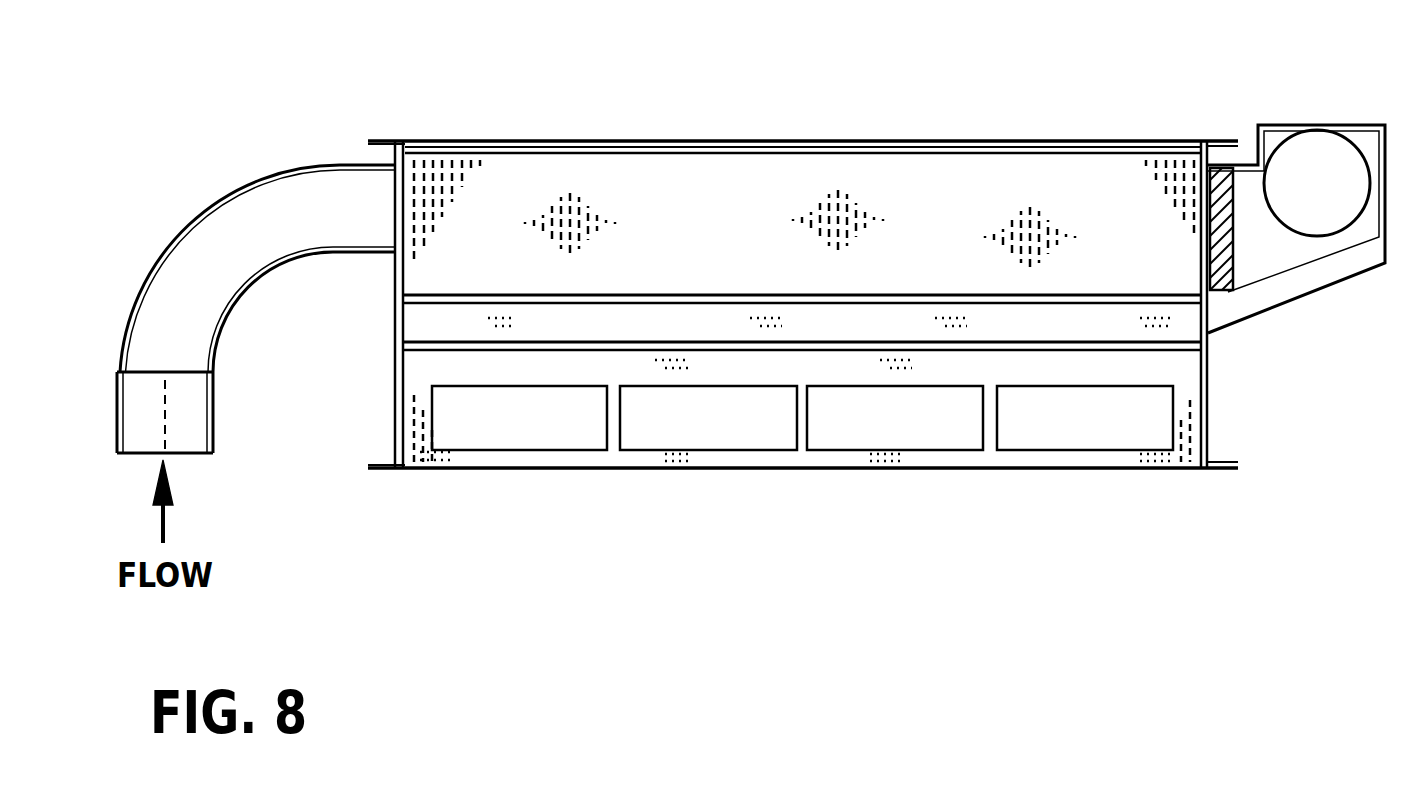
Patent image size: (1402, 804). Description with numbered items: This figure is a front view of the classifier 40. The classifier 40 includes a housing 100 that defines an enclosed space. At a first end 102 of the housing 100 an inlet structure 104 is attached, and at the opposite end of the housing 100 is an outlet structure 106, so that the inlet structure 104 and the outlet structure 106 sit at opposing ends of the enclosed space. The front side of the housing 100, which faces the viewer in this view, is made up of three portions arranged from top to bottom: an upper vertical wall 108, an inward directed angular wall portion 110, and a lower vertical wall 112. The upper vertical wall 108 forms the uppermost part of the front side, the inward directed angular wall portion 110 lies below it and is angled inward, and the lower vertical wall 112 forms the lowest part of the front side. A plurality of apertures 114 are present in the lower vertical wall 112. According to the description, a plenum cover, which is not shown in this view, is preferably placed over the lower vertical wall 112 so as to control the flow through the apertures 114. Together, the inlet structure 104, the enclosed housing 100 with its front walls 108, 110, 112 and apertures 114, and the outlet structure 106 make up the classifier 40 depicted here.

The classifier 40 is at (832, 125).
The housing 100 is at (698, 248).
The first end 102 is at (396, 272).
The inlet structure 104 is at (165, 358).
The outlet structure 106 is at (1282, 122).
The upper vertical wall 108 is at (987, 228).
The inward directed angular wall portion 110 is at (1113, 323).
The lower vertical wall 112 is at (1045, 365).
The apertures 114 is at (472, 445).